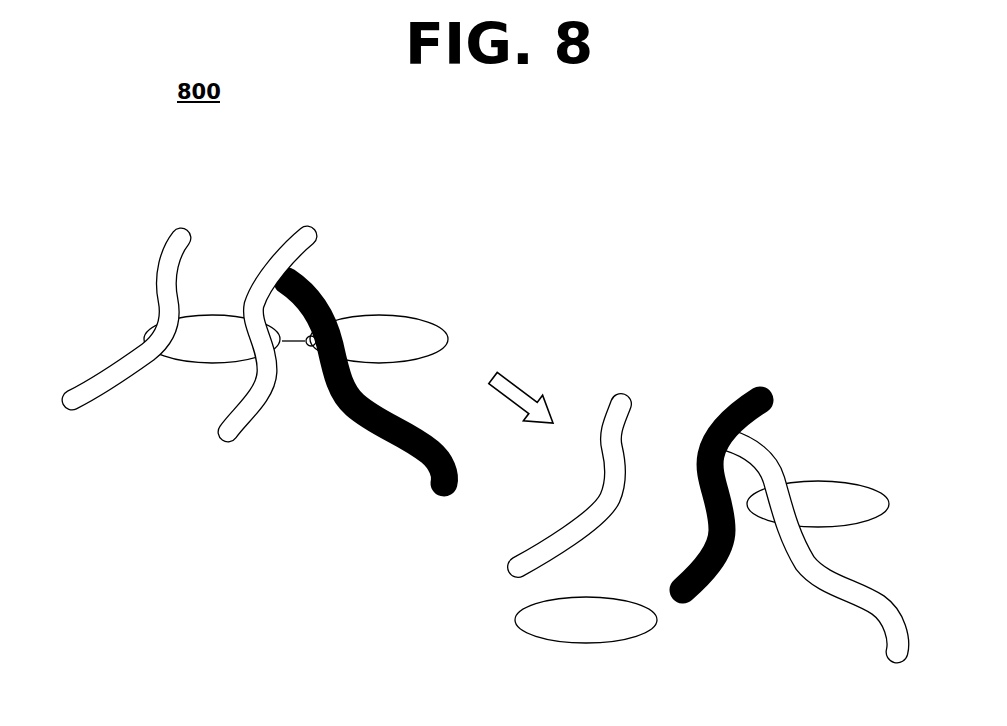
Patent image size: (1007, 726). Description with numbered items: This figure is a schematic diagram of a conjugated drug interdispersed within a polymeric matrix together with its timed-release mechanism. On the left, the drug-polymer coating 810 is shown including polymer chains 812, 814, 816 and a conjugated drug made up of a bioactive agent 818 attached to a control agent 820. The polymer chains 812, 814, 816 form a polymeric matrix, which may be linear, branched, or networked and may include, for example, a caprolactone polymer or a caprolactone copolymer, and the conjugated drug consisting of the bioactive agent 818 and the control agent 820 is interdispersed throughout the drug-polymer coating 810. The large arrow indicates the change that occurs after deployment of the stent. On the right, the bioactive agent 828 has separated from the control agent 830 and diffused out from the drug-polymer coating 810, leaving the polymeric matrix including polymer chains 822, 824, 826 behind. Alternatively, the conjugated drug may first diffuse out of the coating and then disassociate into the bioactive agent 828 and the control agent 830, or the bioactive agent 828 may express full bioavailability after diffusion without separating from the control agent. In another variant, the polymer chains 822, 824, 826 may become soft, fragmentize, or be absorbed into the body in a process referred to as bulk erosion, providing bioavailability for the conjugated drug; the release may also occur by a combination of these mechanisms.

The drug-polymer coating 810 is at (124, 283).
The polymer chain 812 is at (185, 232).
The polymer chain 814 is at (312, 232).
The polymer chain 816 is at (327, 292).
The bioactive agent 818 is at (210, 363).
The control agent 820 is at (438, 318).
The polymer chain 822 is at (626, 393).
The polymer chain 824 is at (763, 393).
The polymer chain 826 is at (773, 457).
The bioactive agent 828 is at (576, 645).
The control agent 830 is at (870, 484).